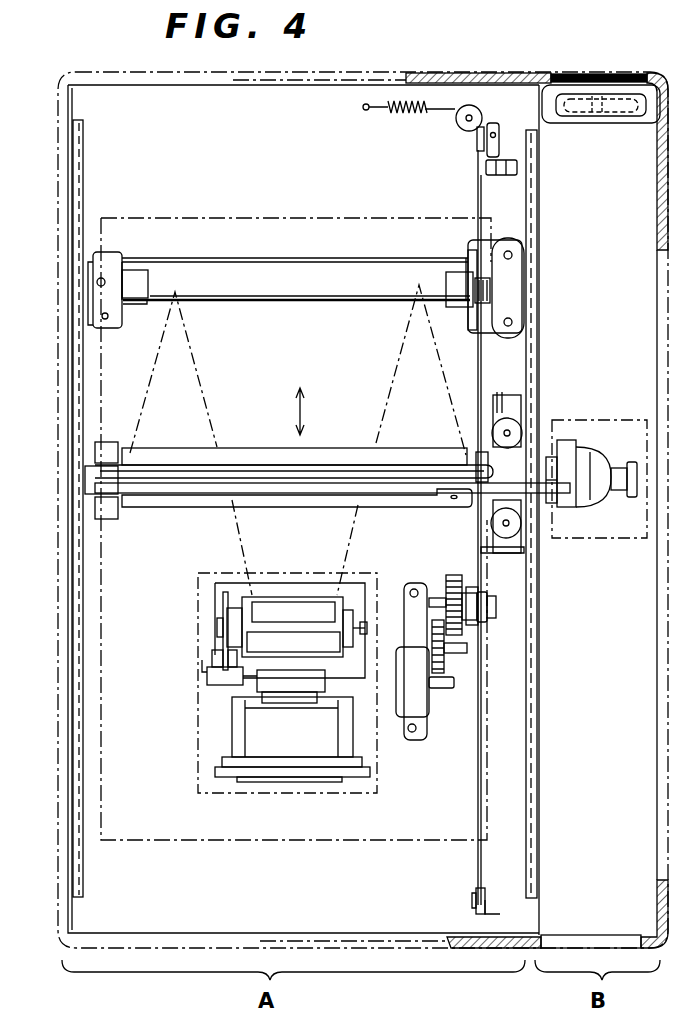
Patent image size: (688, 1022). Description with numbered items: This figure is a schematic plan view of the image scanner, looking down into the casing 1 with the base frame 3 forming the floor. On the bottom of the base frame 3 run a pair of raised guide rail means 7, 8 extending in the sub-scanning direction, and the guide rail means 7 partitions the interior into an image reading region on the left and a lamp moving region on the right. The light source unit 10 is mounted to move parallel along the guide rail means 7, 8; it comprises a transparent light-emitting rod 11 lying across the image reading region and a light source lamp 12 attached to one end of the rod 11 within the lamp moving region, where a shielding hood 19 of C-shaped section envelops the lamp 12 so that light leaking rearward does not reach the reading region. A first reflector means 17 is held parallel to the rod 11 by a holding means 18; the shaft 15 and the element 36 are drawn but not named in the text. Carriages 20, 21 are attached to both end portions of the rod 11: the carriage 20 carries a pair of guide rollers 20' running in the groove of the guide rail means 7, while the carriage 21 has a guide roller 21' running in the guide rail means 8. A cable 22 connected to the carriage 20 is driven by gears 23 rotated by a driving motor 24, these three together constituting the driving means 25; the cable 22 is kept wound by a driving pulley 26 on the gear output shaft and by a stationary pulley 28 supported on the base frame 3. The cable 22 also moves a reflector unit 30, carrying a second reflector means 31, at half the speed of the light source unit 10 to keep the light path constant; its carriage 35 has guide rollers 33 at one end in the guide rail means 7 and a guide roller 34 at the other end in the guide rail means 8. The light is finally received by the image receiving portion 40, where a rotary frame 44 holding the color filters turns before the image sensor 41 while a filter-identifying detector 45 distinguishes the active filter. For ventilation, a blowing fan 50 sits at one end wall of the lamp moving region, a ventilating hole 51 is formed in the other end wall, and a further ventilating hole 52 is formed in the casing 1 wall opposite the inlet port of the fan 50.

The casing 1 is at (469, 72).
The base frame 3 is at (122, 360).
The guide rail means 7 is at (530, 778).
The guide rail means 8 is at (73, 597).
The light source unit 10 is at (622, 588).
The light-emitting rod 11 is at (553, 505).
The light source lamp 12 is at (595, 500).
The drive shaft 15 is at (250, 470).
The first reflector means 17 is at (345, 452).
The holding means 18 is at (205, 497).
The shielding hood 19 is at (613, 422).
The carriage 20 is at (448, 445).
The guide rollers 20' is at (506, 460).
The carriage 21 is at (68, 524).
The guide roller 21' is at (67, 471).
The cable 22 is at (478, 367).
The gears 23 is at (463, 625).
The driving motor 24 is at (418, 703).
The driving means 25 is at (580, 655).
The driving pulley 26 is at (467, 593).
The stationary pulley 28 is at (478, 140).
The reflector unit 30 is at (212, 256).
The second reflector means 31 is at (342, 280).
The guide rollers 33 is at (505, 248).
The guide roller 34 is at (96, 280).
The carriage 35 is at (466, 248).
The clamp 36 is at (488, 292).
The image receiving portion 40 is at (195, 770).
The image sensor 41 is at (257, 727).
The rotary frame 44 is at (297, 598).
The filter-identifying detector 45 is at (205, 658).
The blowing fan 50 is at (616, 112).
The ventilating hole 51 is at (594, 938).
The ventilating hole 52 is at (597, 80).